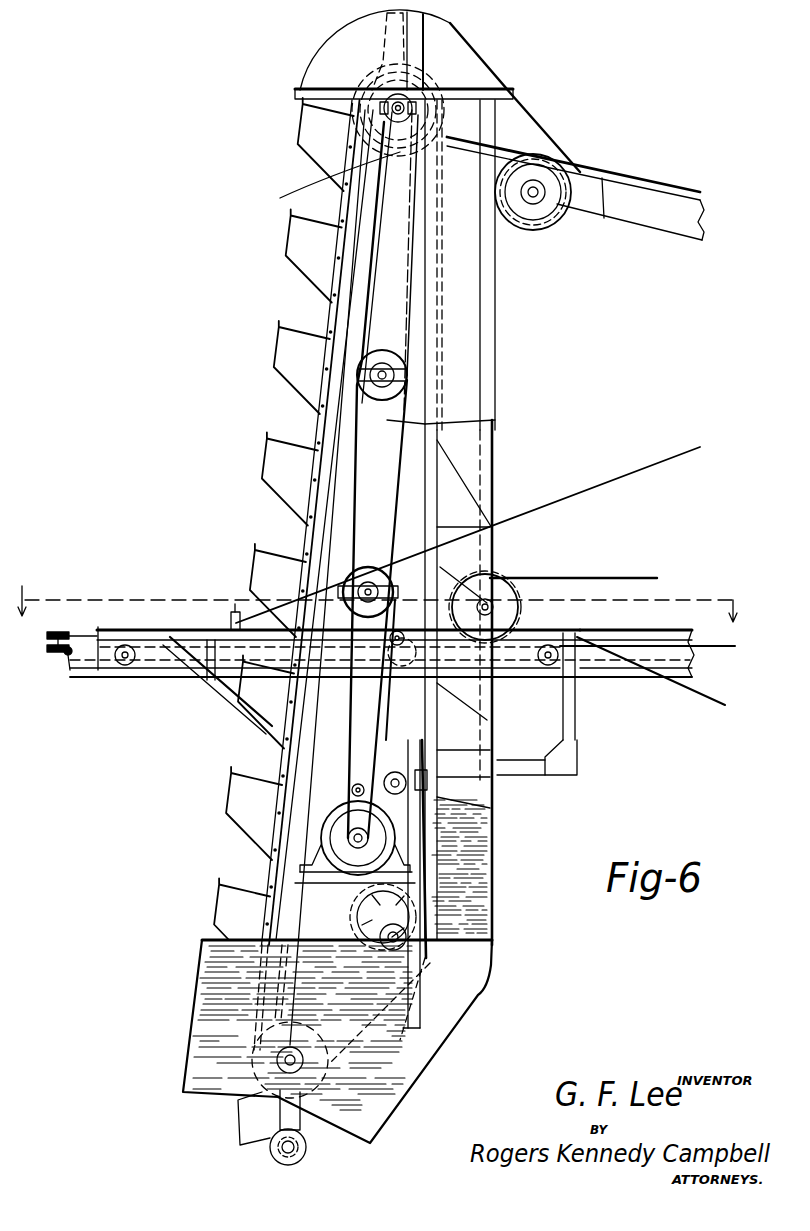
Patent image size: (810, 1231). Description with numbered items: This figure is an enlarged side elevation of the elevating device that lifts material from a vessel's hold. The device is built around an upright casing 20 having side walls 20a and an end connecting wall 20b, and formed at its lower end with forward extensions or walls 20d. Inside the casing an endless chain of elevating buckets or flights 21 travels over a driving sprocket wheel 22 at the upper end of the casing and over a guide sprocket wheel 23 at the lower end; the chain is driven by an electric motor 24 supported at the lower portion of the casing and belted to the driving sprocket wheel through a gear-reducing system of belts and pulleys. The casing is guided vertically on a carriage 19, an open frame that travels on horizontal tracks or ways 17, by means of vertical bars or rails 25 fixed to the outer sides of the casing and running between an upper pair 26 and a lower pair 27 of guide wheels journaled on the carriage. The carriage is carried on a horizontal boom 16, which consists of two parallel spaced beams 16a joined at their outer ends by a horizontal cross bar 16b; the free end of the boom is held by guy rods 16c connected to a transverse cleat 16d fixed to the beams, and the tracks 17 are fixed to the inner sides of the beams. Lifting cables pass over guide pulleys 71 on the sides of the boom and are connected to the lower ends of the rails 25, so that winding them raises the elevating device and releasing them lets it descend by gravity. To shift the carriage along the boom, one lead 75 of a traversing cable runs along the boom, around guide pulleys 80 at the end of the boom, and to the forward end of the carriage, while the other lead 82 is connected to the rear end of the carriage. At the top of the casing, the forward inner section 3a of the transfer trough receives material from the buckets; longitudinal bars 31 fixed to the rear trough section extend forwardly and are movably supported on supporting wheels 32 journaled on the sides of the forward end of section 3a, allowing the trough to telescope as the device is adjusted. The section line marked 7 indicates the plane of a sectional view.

The upright casing 20 is at (442, 33).
The side walls 20a is at (468, 298).
The end connecting wall 20b is at (500, 347).
The forward extensions or walls 20d is at (383, 1095).
The driving sprocket wheel 22 is at (400, 155).
The elevating buckets or flights 21 is at (275, 815).
The longitudinal bars 31 is at (660, 178).
The forward inner section 3a is at (665, 225).
The supporting wheels 32 is at (548, 167).
The upper pair of guide wheels 26 is at (397, 643).
The section line 7- 7 is at (379, 593).
The horizontal boom 16 is at (380, 668).
The parallel spaced beams 16a is at (672, 652).
The horizontal cross bar 16b is at (66, 656).
The guy rods 16c is at (628, 480).
The transverse cleat 16d is at (231, 630).
The horizontal tracks or ways 17 is at (700, 668).
The lead of the cable 75 is at (737, 641).
The guide pulleys 80 is at (62, 636).
The other lead of the cable 82 is at (716, 708).
The guide pulleys 71 is at (508, 598).
The carriage 19 is at (530, 772).
The lower pair of guide wheels 27 is at (355, 785).
The electric motor 24 is at (360, 860).
The vertical bars or rails 25 is at (415, 852).
The guide sprocket wheel 23 is at (228, 1094).